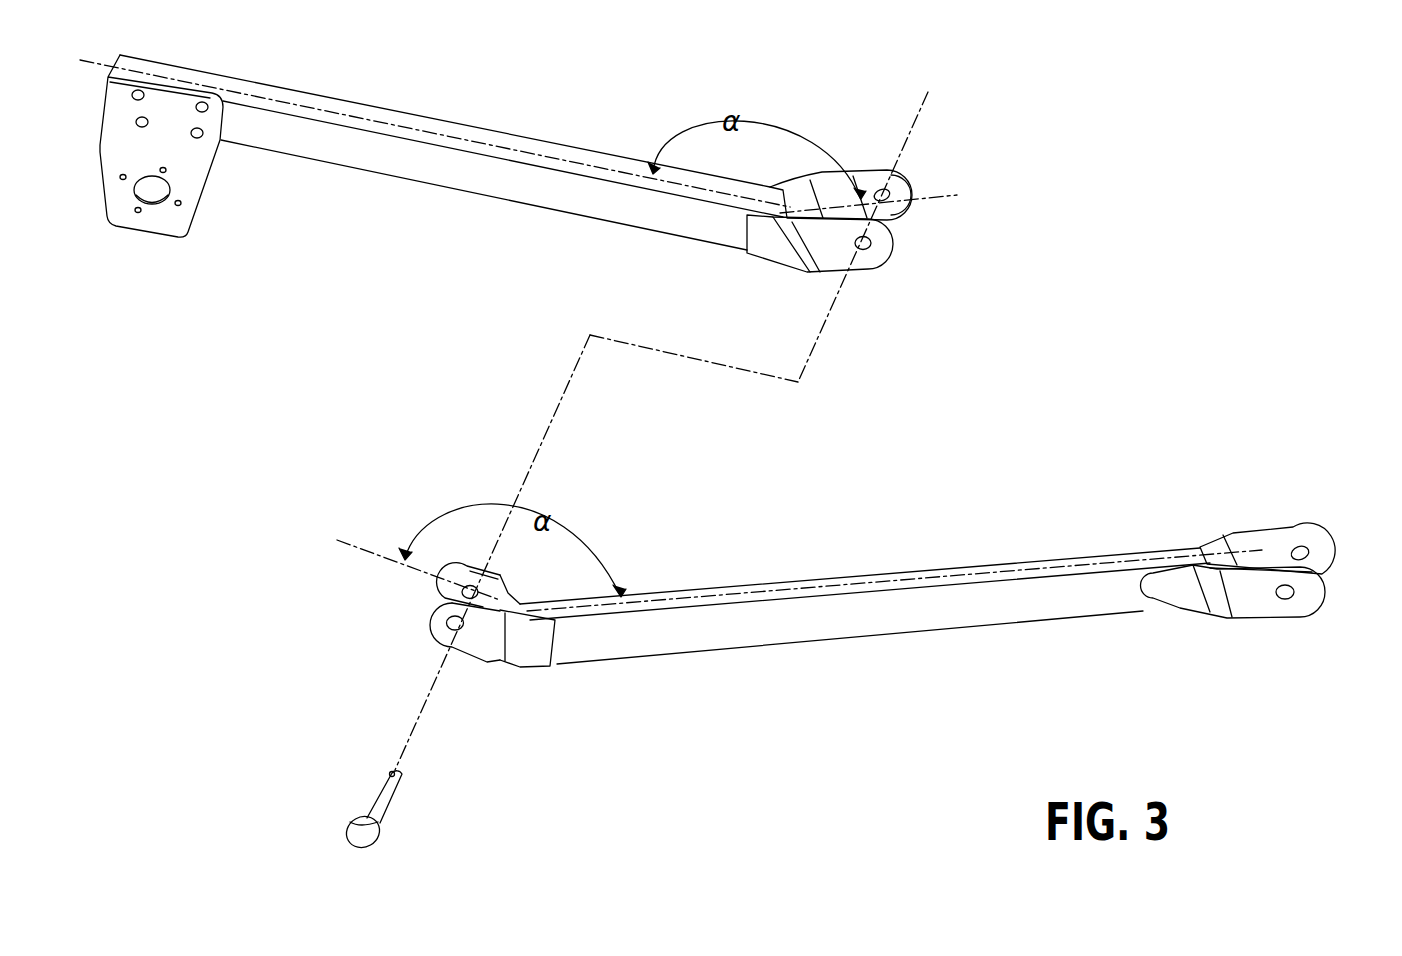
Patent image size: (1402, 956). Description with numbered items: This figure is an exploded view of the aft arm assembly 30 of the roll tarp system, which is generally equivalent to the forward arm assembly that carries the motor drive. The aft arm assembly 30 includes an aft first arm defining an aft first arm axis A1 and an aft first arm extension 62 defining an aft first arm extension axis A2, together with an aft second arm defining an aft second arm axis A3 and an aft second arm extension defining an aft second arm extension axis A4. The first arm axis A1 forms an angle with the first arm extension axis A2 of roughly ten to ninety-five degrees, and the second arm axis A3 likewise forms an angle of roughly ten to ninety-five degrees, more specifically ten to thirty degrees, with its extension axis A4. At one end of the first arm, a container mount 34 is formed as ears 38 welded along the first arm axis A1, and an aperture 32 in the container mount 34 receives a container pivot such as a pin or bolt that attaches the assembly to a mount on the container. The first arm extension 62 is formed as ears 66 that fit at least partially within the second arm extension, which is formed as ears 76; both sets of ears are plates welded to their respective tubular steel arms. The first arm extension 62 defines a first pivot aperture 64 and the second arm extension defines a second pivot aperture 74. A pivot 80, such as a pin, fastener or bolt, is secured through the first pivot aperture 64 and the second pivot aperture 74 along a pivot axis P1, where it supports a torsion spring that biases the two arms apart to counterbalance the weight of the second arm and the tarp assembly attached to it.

The aft arm assembly 30 is at (1075, 180).
The aperture 32 is at (1178, 597).
The container mount 34 is at (1290, 597).
The ears 38 is at (1315, 545).
The aft first arm extension 62 is at (540, 655).
The first pivot aperture 64 is at (450, 640).
The ears 66 is at (443, 587).
The second pivot aperture 74 is at (880, 190).
The ears 76 is at (896, 211).
The pivot 80 is at (388, 790).
The aft first arm axis A1 is at (1253, 548).
The aft first arm extension axis A2 is at (355, 541).
The aft second arm axis A3 is at (276, 95).
The aft second arm extension axis A4 is at (937, 197).
The pivot axis P1 is at (565, 390).